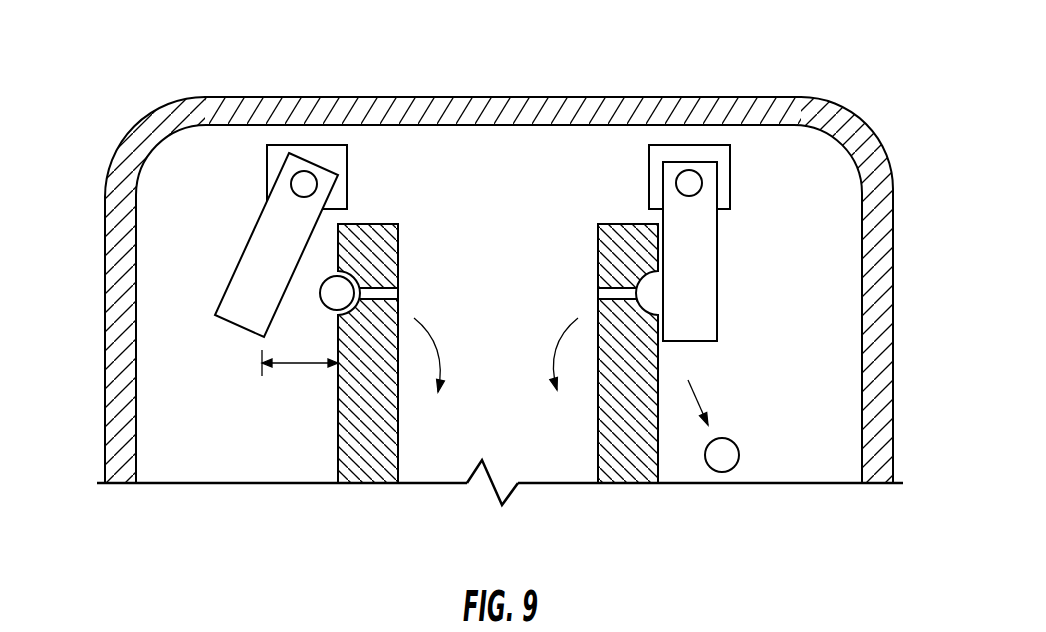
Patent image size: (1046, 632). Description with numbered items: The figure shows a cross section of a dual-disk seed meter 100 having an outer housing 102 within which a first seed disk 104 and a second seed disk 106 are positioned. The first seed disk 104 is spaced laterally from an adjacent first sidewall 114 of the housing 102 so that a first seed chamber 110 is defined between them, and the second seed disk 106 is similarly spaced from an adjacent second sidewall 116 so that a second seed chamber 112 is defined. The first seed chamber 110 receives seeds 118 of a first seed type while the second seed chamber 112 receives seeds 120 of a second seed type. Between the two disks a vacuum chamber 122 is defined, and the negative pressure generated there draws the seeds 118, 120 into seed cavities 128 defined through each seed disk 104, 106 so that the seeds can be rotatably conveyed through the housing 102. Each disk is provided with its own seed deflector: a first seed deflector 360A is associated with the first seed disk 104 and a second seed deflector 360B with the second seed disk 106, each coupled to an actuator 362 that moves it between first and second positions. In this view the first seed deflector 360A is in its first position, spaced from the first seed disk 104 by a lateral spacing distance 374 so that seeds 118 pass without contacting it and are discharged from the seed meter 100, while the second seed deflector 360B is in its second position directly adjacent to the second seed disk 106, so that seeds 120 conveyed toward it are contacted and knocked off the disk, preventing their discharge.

The seed meter 100 is at (102, 100).
The outer housing 102 is at (858, 117).
The first seed disk 104 is at (337, 442).
The second seed disk 106 is at (659, 442).
The first seed chamber 110 is at (215, 445).
The second seed chamber 112 is at (830, 445).
The first sidewall 114 is at (116, 366).
The second sidewall 116 is at (887, 370).
The seeds of a first seed type 118 is at (334, 294).
The seeds of a second seed type 120 is at (726, 450).
The vacuum chamber 122 is at (493, 468).
The seed cavities 128 is at (376, 287).
The first seed deflector 360A is at (262, 208).
The second seed deflector 360B is at (718, 230).
The actuator 362 is at (348, 188).
The lateral spacing distance 374 is at (298, 366).